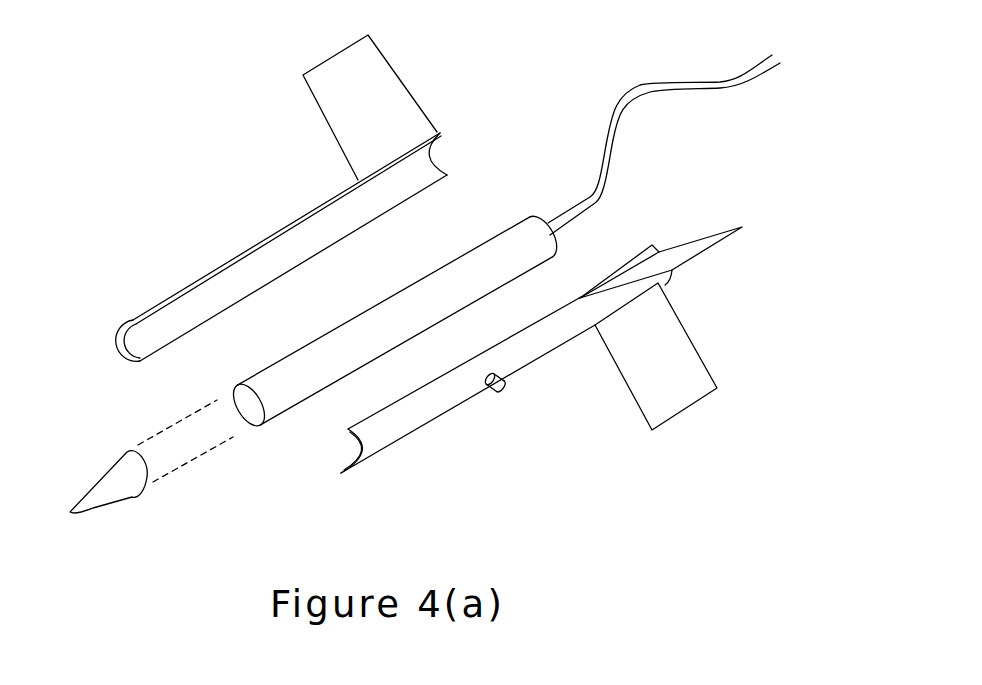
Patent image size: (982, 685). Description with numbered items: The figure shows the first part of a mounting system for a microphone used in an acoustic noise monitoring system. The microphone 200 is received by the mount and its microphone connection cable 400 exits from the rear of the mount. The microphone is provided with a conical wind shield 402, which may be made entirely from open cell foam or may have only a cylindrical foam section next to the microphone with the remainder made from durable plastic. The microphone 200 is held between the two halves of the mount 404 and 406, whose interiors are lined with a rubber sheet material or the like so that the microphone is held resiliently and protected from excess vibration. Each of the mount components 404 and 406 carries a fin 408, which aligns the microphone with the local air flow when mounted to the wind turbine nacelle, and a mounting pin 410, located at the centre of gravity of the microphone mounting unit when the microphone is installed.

The microphone 200 is at (280, 407).
The microphone connection cable 400 is at (742, 78).
The conical wind shield 402 is at (103, 497).
The mount half 404 is at (407, 427).
The mount half 406 is at (148, 332).
The fin 408 is at (647, 405).
The mounting pin 410 is at (490, 395).